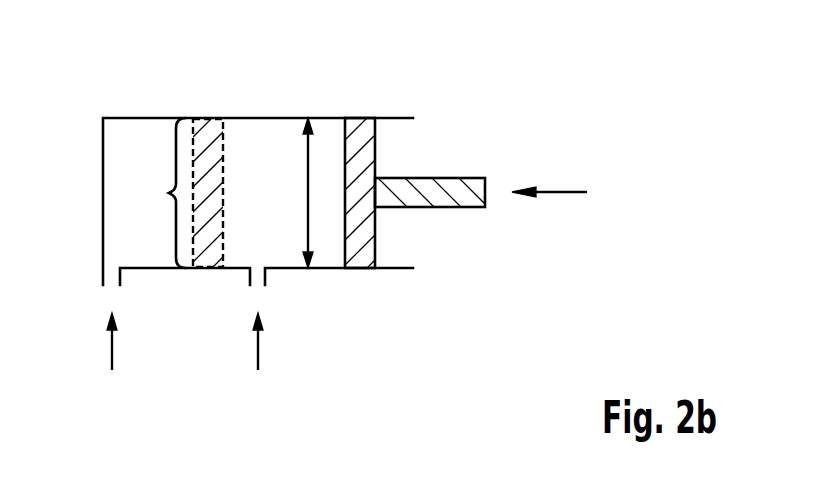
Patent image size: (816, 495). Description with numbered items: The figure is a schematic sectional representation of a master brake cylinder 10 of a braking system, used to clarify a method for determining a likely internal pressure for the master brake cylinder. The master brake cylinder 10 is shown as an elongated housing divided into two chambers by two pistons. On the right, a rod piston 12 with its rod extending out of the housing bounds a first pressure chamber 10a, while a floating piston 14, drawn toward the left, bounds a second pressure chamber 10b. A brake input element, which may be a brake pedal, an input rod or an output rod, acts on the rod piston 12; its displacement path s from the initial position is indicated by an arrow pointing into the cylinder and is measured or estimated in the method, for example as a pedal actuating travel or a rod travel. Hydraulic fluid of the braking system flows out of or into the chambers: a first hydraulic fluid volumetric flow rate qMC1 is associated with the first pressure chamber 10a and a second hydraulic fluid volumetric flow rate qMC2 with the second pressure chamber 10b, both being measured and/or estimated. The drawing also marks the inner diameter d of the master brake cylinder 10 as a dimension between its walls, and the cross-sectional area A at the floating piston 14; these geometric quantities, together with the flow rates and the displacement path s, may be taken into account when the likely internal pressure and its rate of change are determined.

The master brake cylinder 10 is at (290, 117).
The first pressure chamber 10a is at (325, 257).
The second pressure chamber 10b is at (152, 257).
The rod piston 12 is at (361, 117).
The floating piston 14 is at (208, 117).
The cross-sectional area A is at (158, 194).
The inner diameter d is at (307, 193).
The displacement path s is at (557, 191).
The first hydraulic fluid volumetric flow rate qMC1 is at (110, 358).
The second hydraulic fluid volumetric flow rate qMC2 is at (258, 358).